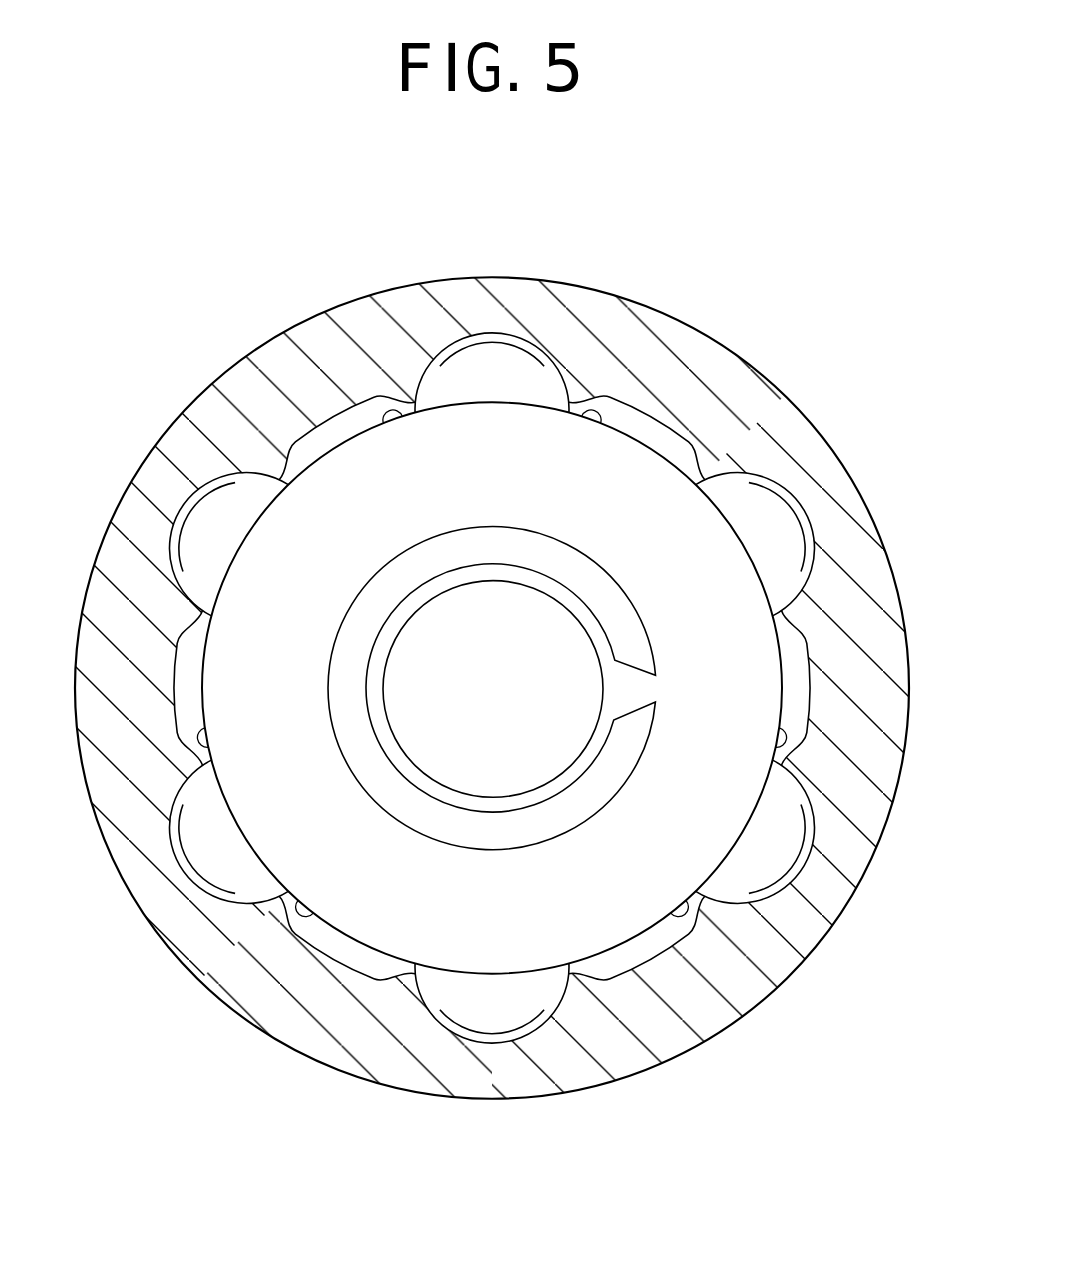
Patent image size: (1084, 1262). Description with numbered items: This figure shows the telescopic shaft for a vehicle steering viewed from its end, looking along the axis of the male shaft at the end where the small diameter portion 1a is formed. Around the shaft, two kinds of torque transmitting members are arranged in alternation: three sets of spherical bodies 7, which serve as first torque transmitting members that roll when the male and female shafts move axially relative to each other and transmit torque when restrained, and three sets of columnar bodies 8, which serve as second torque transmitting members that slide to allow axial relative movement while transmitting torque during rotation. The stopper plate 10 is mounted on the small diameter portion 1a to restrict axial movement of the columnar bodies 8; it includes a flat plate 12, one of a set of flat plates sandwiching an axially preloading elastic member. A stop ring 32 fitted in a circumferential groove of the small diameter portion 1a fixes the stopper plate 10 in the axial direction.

The small diameter portion 1a is at (487, 745).
The spherical bodies 7 is at (496, 362).
The columnar bodies 8 is at (208, 512).
The stopper plate 10 is at (628, 427).
The flat plate 12 is at (640, 487).
The stop ring 32 is at (610, 574).